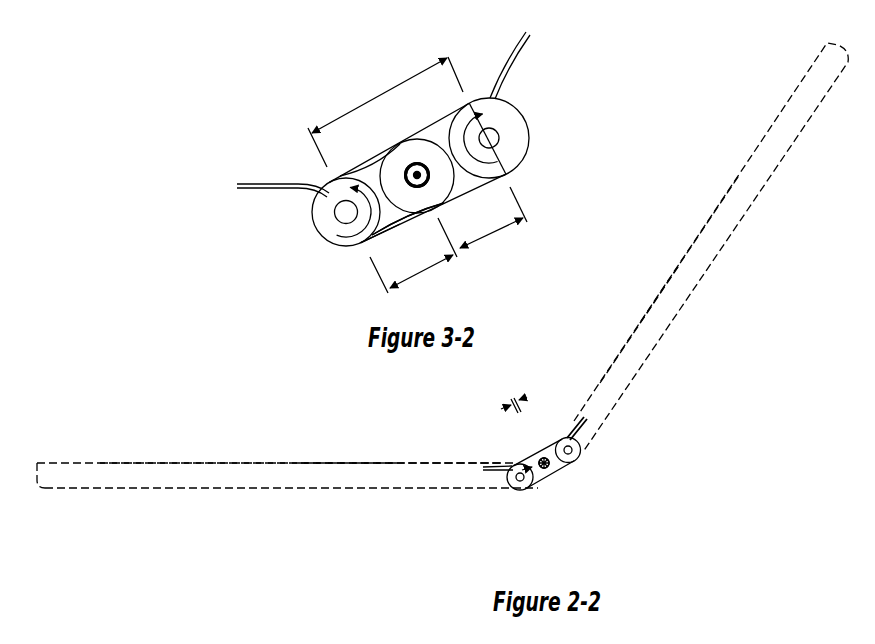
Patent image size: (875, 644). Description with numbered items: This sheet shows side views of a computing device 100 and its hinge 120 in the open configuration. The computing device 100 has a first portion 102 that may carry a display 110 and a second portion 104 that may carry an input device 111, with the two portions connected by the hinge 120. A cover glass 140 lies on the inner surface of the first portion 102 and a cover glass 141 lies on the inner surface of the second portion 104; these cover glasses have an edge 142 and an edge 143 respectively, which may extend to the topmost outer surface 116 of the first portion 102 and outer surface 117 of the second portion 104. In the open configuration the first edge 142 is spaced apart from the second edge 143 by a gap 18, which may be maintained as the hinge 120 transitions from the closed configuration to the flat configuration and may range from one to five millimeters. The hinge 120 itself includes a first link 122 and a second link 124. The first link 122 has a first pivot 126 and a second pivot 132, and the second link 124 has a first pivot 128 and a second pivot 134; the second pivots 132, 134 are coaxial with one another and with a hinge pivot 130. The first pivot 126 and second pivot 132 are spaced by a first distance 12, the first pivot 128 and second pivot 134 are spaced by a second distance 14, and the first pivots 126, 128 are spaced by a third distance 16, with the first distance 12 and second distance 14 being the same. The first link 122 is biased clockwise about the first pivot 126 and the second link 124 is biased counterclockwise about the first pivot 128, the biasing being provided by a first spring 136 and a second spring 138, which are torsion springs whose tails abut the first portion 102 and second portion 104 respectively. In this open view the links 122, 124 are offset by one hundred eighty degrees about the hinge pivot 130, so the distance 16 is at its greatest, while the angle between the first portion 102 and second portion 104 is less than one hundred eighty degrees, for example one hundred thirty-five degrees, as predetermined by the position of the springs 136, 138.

In FIG. 3-2, the computing device 100 is at (553, 143).
In FIG. 3-2, the first distance 12 is at (495, 238).
In FIG. 3-2, the second distance 14 is at (428, 270).
In FIG. 3-2, the third distance 16 is at (353, 113).
In FIG. 2-2, the gap 18 is at (521, 398).
In FIG. 2-2, the first portion 102 is at (756, 206).
In FIG. 2-2, the second portion 104 is at (141, 486).
In FIG. 2-2, the display 110 is at (632, 317).
In FIG. 2-2, the input device 111 is at (231, 461).
In FIG. 2-2, the outer surface 116 is at (559, 470).
In FIG. 2-2, the outer surface 117 is at (548, 472).
In FIG. 2-2, the hinge 120 is at (593, 470).
In FIG. 3-2, the first link 122 is at (483, 190).
In FIG. 3-2, the second link 124 is at (387, 236).
In FIG. 3-2, the first pivot 126 is at (500, 132).
In FIG. 3-2, the first pivot 128 is at (332, 251).
In FIG. 3-2, the hinge pivot 130 is at (418, 163).
In FIG. 2-2, the hinge pivot 130 is at (525, 467).
In FIG. 3-2, the second pivot 132 is at (445, 205).
In FIG. 3-2, the second pivot 134 is at (417, 164).
In FIG. 3-2, the first spring 136 is at (510, 57).
In FIG. 2-2, the first spring 136 is at (590, 432).
In FIG. 3-2, the second spring 138 is at (255, 184).
In FIG. 2-2, the second spring 138 is at (493, 472).
In FIG. 2-2, the cover glass 140 is at (690, 250).
In FIG. 2-2, the cover glass 141 is at (338, 462).
In FIG. 2-2, the edge 142 is at (545, 458).
In FIG. 2-2, the edge 143 is at (537, 452).